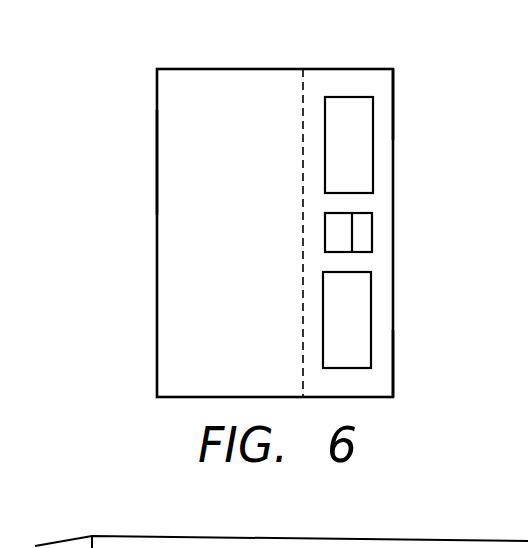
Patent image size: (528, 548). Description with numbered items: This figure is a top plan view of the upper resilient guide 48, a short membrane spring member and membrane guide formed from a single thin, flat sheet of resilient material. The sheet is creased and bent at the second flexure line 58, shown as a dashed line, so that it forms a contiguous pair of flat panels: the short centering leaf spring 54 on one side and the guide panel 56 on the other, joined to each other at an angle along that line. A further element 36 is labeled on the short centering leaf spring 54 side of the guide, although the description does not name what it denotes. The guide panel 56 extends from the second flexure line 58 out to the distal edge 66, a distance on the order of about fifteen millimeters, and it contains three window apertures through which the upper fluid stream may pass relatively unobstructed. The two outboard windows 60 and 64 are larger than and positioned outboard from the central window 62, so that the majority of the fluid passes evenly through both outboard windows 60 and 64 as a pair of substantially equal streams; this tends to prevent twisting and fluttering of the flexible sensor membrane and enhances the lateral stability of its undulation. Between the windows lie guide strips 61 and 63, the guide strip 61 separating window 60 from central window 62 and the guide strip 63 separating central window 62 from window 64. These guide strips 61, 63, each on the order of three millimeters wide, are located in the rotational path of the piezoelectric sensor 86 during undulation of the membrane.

The panel 36 is at (157, 162).
The upper resilient guide 48 is at (228, 238).
The short centering leaf spring 54 is at (157, 248).
The guide panel 56 is at (393, 376).
The second flexure line 58 is at (303, 303).
The window aperture 60 is at (370, 155).
The guide strip 61 is at (340, 199).
The central window 62 is at (363, 227).
The guide strip 63 is at (340, 265).
The window aperture 64 is at (367, 332).
The distal edge 66 is at (393, 99).
The piezoelectric sensor 86 is at (340, 237).